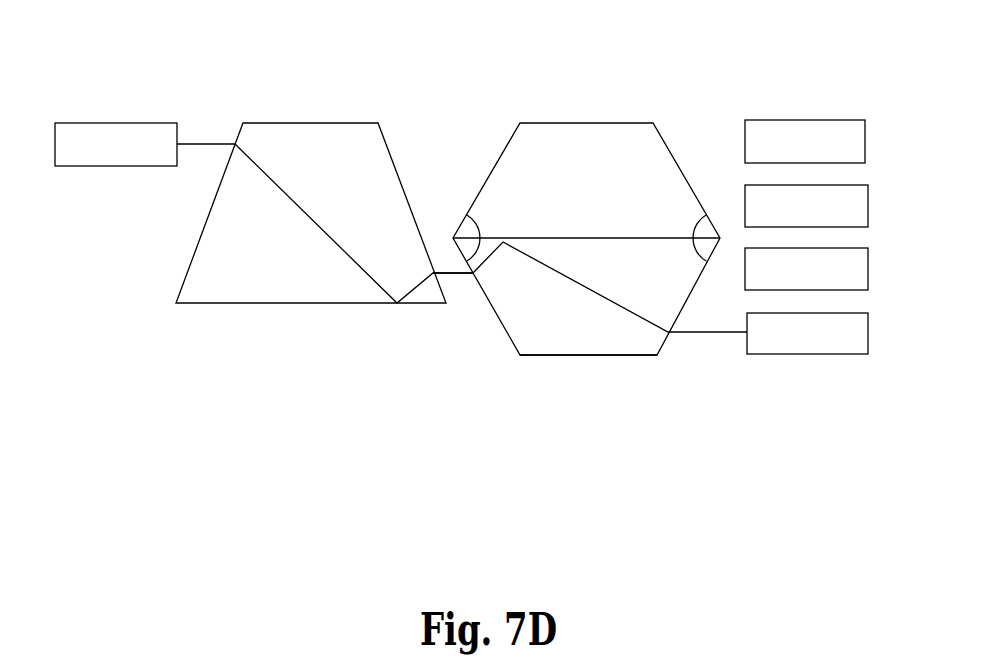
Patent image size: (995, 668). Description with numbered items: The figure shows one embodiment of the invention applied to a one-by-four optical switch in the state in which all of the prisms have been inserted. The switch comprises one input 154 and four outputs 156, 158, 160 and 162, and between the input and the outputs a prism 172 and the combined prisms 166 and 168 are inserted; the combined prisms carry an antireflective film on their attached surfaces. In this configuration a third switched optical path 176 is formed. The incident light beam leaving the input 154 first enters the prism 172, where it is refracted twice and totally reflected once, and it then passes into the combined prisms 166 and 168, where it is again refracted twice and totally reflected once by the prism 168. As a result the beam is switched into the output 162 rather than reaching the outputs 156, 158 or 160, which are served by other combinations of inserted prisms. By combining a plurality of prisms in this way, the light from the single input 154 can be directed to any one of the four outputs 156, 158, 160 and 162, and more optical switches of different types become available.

The input 154 is at (132, 130).
The output 156 is at (800, 128).
The output 158 is at (800, 183).
The output 160 is at (805, 247).
The output 162 is at (792, 352).
The prism 166 is at (590, 132).
The prism 168 is at (513, 310).
The prism 172 is at (370, 147).
The third switched optical path 176 is at (447, 273).